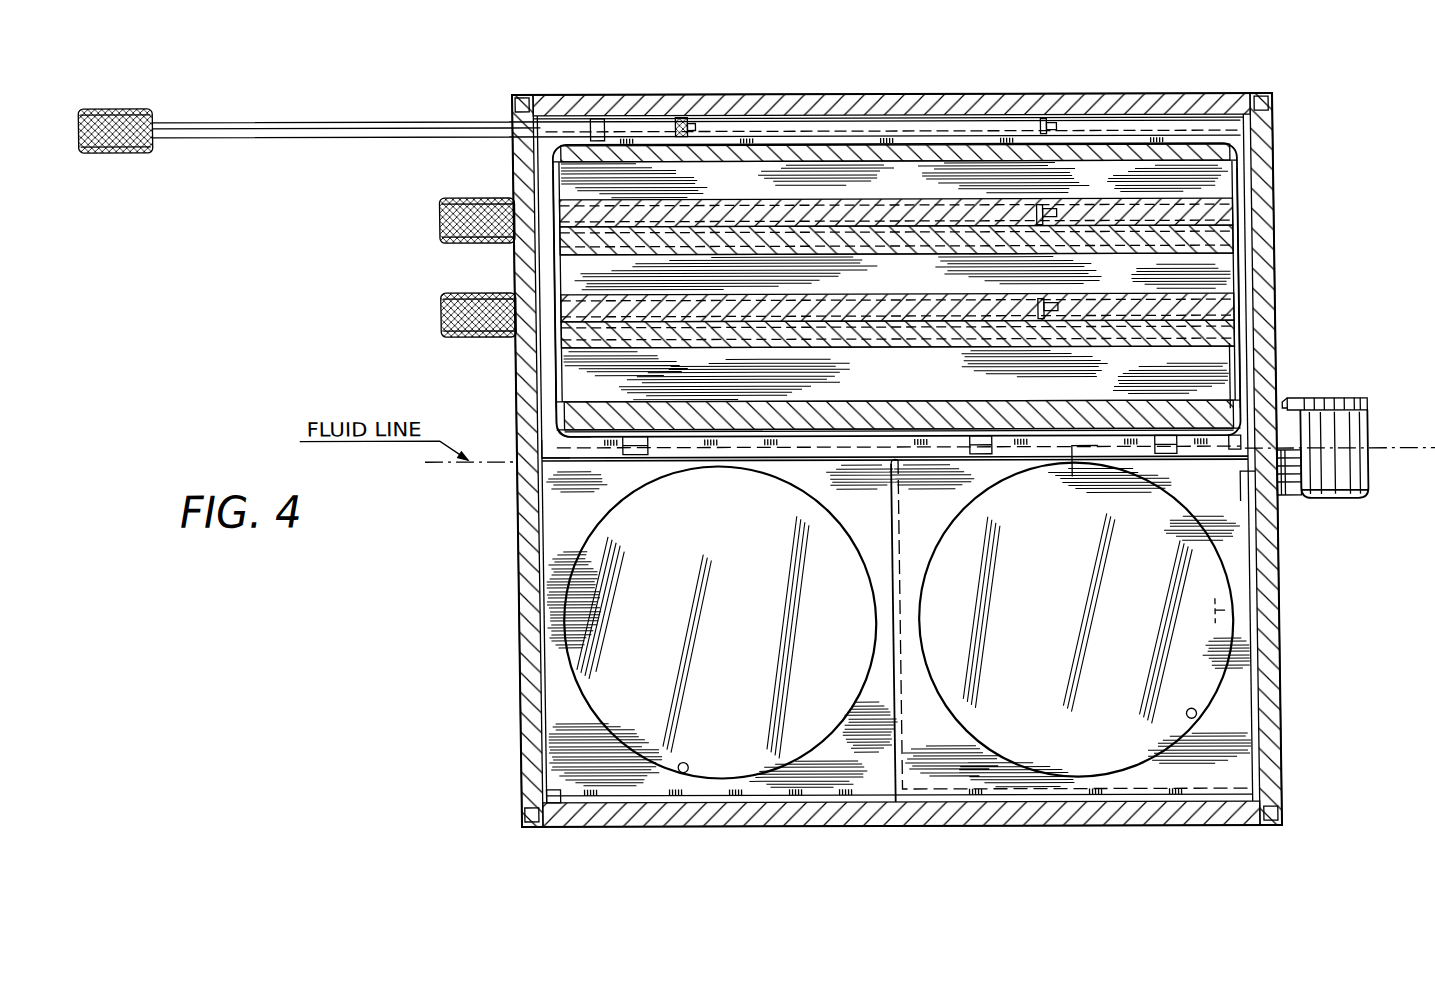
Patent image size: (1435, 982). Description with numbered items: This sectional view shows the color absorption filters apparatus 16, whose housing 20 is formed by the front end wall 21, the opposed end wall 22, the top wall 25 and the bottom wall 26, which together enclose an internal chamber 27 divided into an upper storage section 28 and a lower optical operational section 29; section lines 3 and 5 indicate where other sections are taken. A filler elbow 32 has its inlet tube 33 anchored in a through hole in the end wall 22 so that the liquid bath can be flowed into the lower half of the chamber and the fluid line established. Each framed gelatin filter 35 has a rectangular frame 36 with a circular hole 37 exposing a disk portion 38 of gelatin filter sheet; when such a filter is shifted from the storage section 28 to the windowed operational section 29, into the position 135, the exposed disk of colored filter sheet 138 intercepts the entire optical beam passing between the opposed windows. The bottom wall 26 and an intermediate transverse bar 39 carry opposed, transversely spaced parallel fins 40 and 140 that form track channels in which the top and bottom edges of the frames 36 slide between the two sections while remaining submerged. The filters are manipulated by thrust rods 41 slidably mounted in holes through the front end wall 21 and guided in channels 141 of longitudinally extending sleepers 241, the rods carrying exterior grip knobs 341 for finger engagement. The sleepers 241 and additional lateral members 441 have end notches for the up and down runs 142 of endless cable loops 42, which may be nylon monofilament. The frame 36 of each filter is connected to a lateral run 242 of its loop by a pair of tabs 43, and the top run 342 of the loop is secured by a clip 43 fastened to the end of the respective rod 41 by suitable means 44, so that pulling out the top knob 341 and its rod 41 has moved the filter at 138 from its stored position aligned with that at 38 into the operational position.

The color absorption filters apparatus 16 is at (501, 691).
The housing 20 is at (911, 467).
The end wall 21 is at (512, 535).
The end wall 22 is at (1276, 270).
The top wall 25 is at (813, 97).
The bottom wall 26 is at (731, 825).
The internal chamber 27 is at (1216, 365).
The storage section 28 is at (532, 446).
The optical operational section 29 is at (1232, 426).
The filler elbow 32 is at (1334, 503).
The inlet tube 33 is at (1288, 497).
The framed gelatin filter 35 is at (553, 727).
The rectangular frame 36 is at (571, 780).
The circular hole 37 is at (671, 773).
The disk portion 38 is at (750, 600).
The exposed disk of colored filter sheet 138 is at (1061, 622).
The intermediate transverse bar 39 is at (550, 393).
The fins 40 is at (829, 797).
The thrust rods 41 is at (661, 212).
The cable loops 42 is at (1067, 125).
The tabs and clip 43 is at (677, 145).
The fastening means 44 is at (680, 120).
The operational position 135 is at (1228, 768).
The fins 140 is at (834, 450).
The channels 141 is at (903, 249).
The up and down runs 142 is at (543, 180).
The sleepers 241 is at (700, 199).
The lateral run 242 is at (1082, 440).
The grip knobs 341 is at (137, 153).
The top run 342 is at (601, 120).
The lateral members 441 is at (1138, 158).
The section line 3- 3 is at (1248, 43).
The section line 5- 5 is at (498, 625).